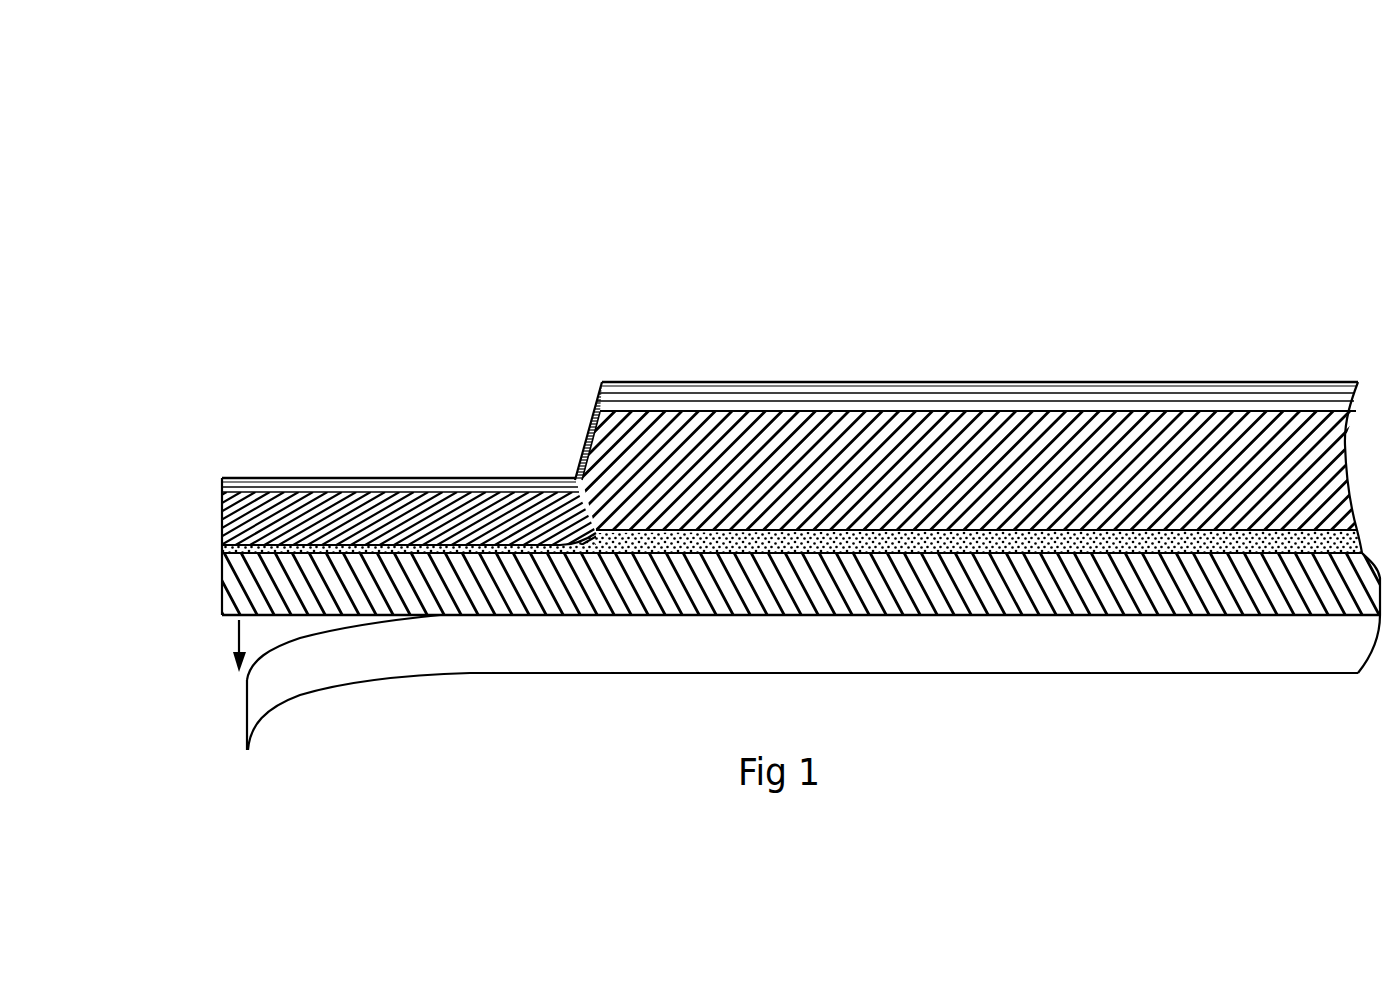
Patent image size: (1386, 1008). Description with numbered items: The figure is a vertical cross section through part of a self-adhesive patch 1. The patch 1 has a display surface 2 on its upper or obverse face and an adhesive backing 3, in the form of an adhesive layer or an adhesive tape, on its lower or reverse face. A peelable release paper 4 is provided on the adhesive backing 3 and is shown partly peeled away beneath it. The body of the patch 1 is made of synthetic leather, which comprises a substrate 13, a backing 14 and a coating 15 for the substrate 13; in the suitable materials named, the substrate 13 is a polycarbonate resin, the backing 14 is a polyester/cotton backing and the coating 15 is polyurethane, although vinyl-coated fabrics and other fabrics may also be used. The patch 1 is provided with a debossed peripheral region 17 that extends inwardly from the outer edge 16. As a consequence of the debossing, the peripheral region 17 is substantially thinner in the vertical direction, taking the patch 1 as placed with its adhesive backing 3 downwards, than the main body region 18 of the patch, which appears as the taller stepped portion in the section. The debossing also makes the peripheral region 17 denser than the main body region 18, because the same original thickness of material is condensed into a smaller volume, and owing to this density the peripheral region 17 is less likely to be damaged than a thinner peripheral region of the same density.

The self-adhesive patch 1 is at (1176, 186).
The display surface 2 is at (1145, 378).
The adhesive backing 3 is at (1013, 573).
The peelable release paper 4 is at (777, 645).
The substrate 13 is at (751, 470).
The backing 14 is at (890, 547).
The coating 15 is at (707, 400).
The outer edge 16 is at (218, 508).
The debossed peripheral region 17 is at (445, 483).
The main body region 18 is at (668, 380).